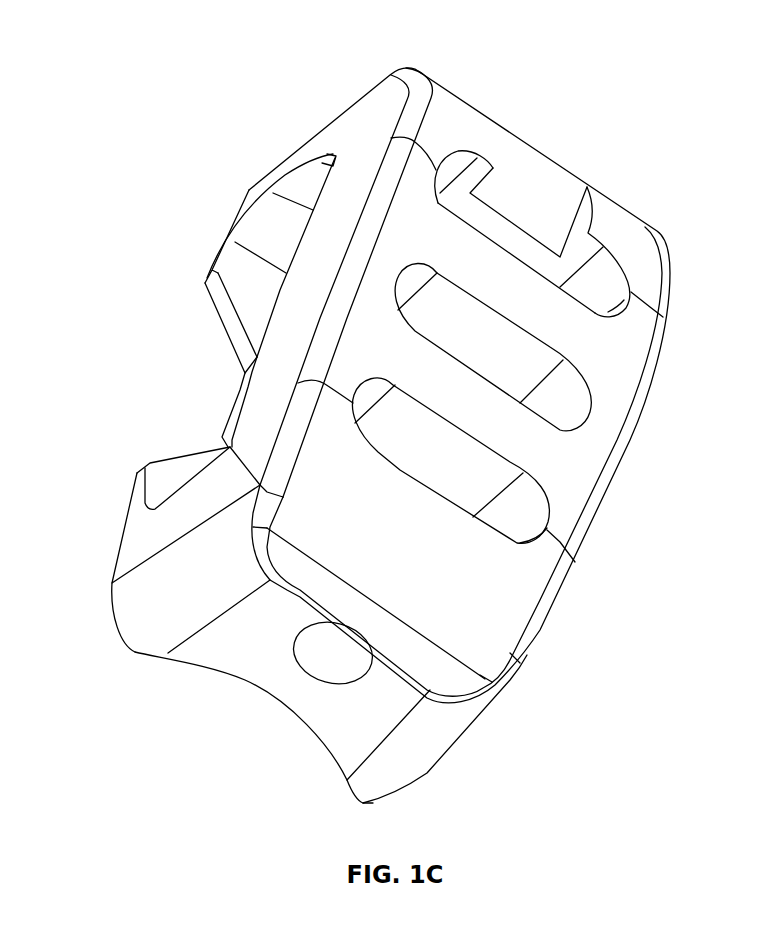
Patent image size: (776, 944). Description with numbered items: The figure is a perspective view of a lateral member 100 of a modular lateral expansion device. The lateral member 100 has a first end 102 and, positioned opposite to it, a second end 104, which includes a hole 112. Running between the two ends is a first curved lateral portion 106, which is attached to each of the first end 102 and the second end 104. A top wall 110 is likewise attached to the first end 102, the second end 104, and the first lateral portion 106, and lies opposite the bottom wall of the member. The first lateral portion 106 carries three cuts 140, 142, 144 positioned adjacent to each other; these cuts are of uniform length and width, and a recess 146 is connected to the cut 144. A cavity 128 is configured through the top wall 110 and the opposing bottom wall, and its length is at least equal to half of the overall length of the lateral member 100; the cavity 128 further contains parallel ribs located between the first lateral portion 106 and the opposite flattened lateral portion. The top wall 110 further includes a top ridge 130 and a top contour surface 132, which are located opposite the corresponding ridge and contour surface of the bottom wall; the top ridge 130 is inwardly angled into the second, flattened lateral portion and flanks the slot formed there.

The lateral member 100 is at (600, 726).
The first end 102 is at (495, 168).
The second end 104 is at (252, 647).
The first curved lateral portion 106 is at (447, 123).
The top wall 110 is at (362, 125).
The hole 112 is at (330, 663).
The cavity 128 is at (283, 232).
The top ridge 130 is at (226, 432).
The top contour surface 132 is at (337, 217).
The cut 140 is at (492, 468).
The cut 142 is at (502, 357).
The cut 144 is at (610, 268).
The recess 146 is at (513, 207).